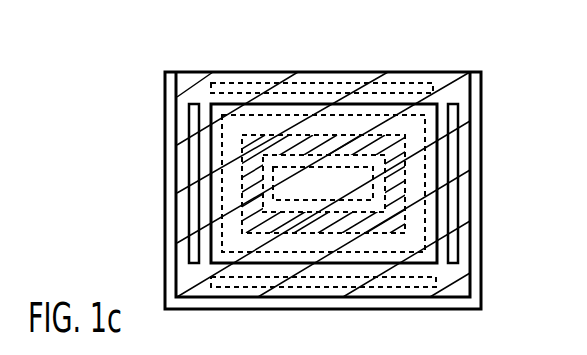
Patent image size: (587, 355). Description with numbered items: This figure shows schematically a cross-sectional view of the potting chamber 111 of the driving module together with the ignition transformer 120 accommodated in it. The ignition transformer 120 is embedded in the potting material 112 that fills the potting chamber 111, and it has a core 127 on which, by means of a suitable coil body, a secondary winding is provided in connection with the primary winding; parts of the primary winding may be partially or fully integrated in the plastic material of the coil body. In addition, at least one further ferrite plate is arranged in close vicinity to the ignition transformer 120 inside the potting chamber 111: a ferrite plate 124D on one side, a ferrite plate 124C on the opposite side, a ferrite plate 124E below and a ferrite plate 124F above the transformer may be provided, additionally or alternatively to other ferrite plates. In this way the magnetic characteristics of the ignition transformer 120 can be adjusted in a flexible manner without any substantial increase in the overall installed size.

The potting chamber 111 is at (163, 228).
The potting material 112 is at (451, 76).
The ignition transformer 120 is at (392, 82).
The ferrite plate 124C is at (505, 248).
The ferrite plate 124D is at (193, 254).
The ferrite plate 124E is at (335, 283).
The ferrite plate 124F is at (323, 85).
The core 127 is at (343, 197).